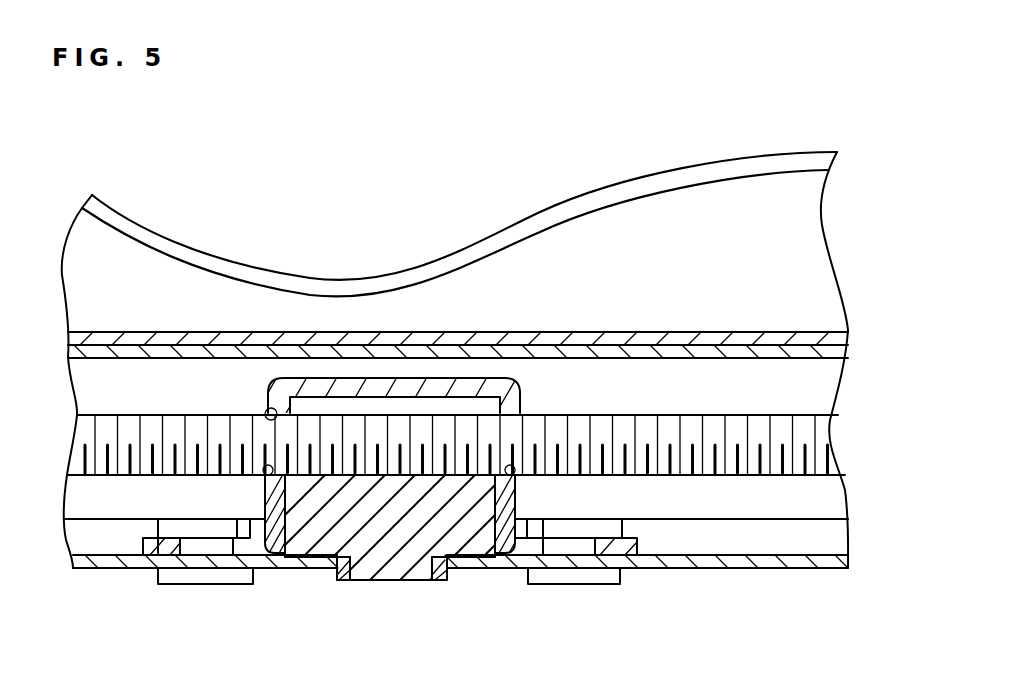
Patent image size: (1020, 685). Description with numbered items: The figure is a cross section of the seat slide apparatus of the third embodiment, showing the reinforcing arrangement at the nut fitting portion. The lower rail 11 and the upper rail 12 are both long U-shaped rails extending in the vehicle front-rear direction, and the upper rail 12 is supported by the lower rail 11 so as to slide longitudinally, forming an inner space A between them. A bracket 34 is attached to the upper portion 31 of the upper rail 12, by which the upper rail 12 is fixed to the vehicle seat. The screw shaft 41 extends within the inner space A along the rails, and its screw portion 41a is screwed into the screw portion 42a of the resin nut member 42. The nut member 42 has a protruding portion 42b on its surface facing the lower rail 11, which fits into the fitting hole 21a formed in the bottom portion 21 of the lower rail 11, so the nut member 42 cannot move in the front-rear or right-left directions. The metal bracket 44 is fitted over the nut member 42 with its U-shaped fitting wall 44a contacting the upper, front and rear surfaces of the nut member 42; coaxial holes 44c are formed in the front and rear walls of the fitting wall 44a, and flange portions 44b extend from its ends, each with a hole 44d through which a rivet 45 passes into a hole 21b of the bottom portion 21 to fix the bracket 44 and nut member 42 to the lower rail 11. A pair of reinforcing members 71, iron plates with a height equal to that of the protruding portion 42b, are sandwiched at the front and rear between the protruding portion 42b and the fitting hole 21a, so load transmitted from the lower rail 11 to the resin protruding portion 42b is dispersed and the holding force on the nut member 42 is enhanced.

The lower rail 11 is at (764, 570).
The upper rail 12 is at (571, 345).
The upper portion 31 is at (270, 337).
The bracket 34 is at (444, 292).
The inner space A is at (175, 358).
The screw shaft 41 is at (607, 414).
The screw portion 41a is at (690, 413).
The bracket 44 is at (456, 454).
The fitting wall 44a is at (516, 390).
The flange portion 44b is at (233, 518).
The hole 44c is at (265, 473).
The hole 44d is at (185, 545).
The bottom portion 21 is at (700, 570).
The fitting hole 21a is at (447, 578).
The hole 21b is at (235, 582).
The rivet 45 is at (172, 584).
The nut member 42 is at (298, 556).
The screw portion 42a is at (267, 412).
The protruding portion 42b is at (381, 582).
The reinforcing member 71 is at (337, 582).